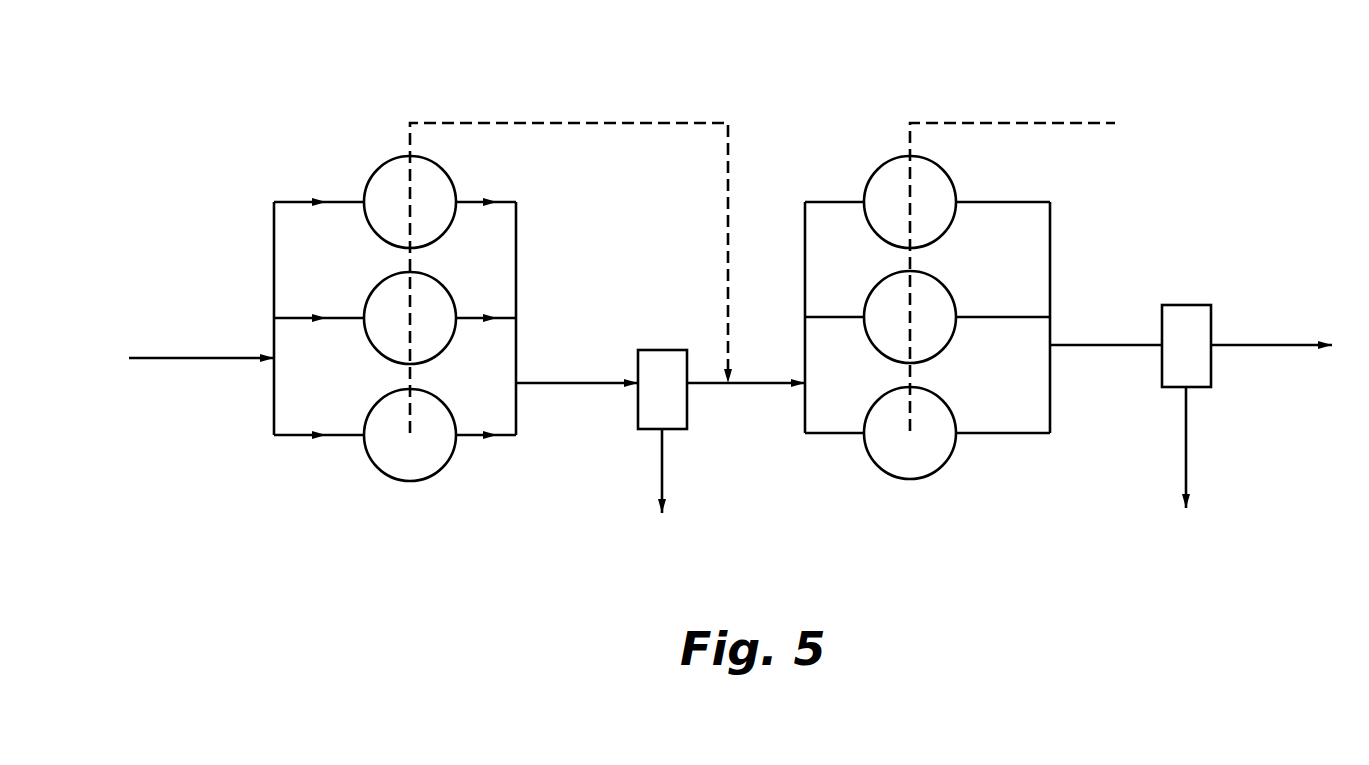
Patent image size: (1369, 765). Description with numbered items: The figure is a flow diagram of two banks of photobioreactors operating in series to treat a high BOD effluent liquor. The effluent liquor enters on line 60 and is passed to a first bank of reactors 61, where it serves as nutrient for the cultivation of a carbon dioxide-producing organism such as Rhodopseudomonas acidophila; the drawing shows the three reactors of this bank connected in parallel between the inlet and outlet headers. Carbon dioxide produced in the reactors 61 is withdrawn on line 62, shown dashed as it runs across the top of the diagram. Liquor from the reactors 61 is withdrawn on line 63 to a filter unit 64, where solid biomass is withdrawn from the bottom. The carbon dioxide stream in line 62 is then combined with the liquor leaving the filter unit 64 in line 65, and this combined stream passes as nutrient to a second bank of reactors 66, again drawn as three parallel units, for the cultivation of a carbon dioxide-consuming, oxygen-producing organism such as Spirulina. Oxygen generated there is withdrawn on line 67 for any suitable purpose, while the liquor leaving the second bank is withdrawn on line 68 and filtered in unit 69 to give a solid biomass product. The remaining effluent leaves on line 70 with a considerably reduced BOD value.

The line 60 is at (192, 358).
The first bank of reactors 61 is at (443, 218).
The line 62 is at (552, 121).
The line 63 is at (577, 383).
The filter unit 64 is at (676, 402).
The line 65 is at (771, 383).
The second bank of reactors 66 is at (941, 209).
The line 67 is at (1013, 121).
The line 68 is at (1110, 345).
The unit 69 is at (1203, 360).
The line 70 is at (1283, 345).